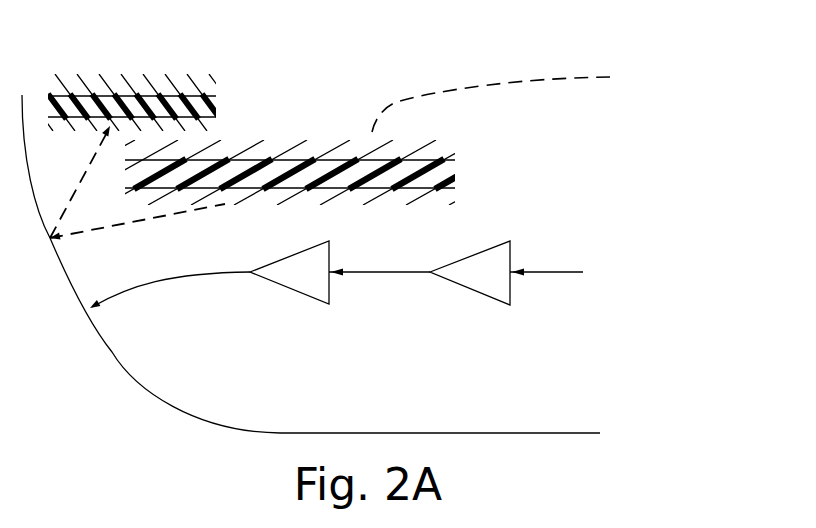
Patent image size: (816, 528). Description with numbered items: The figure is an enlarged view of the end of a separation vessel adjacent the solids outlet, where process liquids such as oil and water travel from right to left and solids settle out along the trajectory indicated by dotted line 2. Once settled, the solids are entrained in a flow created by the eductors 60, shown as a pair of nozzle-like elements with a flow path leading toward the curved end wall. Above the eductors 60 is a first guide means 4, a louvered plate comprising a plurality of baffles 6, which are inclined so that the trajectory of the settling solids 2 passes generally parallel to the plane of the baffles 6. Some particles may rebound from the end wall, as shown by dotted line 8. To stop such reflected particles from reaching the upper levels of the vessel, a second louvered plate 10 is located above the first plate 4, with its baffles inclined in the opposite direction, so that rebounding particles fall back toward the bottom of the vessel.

The louvered plate 10 is at (175, 67).
The dotted line 2 is at (490, 87).
The guide means 4 is at (483, 157).
The baffles 6 is at (301, 155).
The dotted line 8 is at (75, 193).
The eductors 60 is at (289, 287).